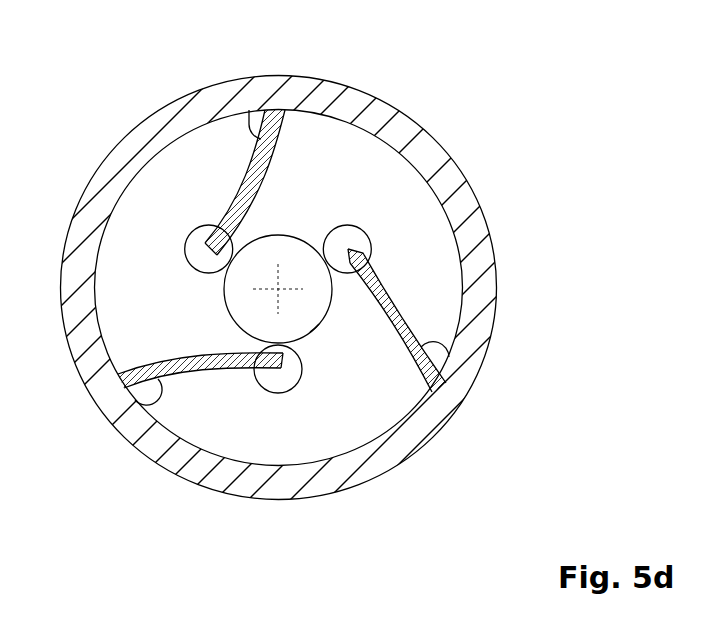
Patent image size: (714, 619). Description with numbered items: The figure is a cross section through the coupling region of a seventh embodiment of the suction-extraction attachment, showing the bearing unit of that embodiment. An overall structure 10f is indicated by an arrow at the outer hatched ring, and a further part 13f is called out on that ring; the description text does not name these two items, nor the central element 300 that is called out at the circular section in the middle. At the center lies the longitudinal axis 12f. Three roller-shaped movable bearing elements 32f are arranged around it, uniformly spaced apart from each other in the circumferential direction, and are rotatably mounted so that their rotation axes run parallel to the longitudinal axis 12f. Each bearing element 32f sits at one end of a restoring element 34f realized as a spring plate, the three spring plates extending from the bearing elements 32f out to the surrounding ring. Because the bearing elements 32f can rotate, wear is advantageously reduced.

The catheter / tubular body 10f is at (108, 74).
The outer wall 13f is at (373, 97).
The longitudinal axis 12f is at (283, 282).
The lumen wall 300 is at (319, 324).
The bearing elements 32f is at (185, 250).
The restoring elements 34f is at (250, 110).